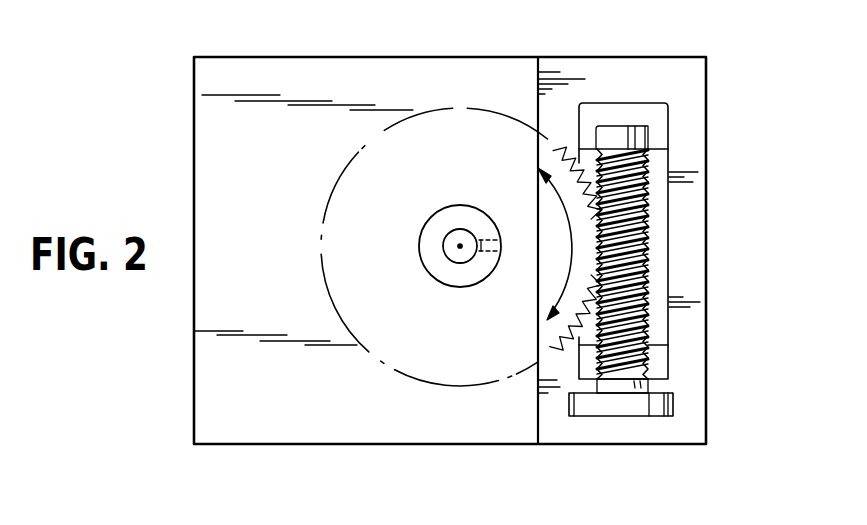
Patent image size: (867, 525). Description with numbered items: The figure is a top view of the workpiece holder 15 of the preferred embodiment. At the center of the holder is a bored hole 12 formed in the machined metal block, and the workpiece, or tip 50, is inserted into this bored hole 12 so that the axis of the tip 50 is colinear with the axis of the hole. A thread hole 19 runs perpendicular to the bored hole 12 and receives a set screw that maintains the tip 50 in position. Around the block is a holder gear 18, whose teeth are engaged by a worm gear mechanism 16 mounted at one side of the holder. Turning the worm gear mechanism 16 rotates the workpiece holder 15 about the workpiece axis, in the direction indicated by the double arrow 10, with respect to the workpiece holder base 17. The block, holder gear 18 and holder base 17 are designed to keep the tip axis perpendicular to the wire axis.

The workpiece holder 15 is at (521, 50).
The holder gear 18 is at (317, 272).
The double arrow 10 is at (571, 252).
The bored hole 12 is at (443, 285).
The workpiece (tip) 50 is at (445, 236).
The thread hole 19 is at (487, 252).
The workpiece holder base 17 is at (692, 281).
The worm gear mechanism 16 is at (673, 404).